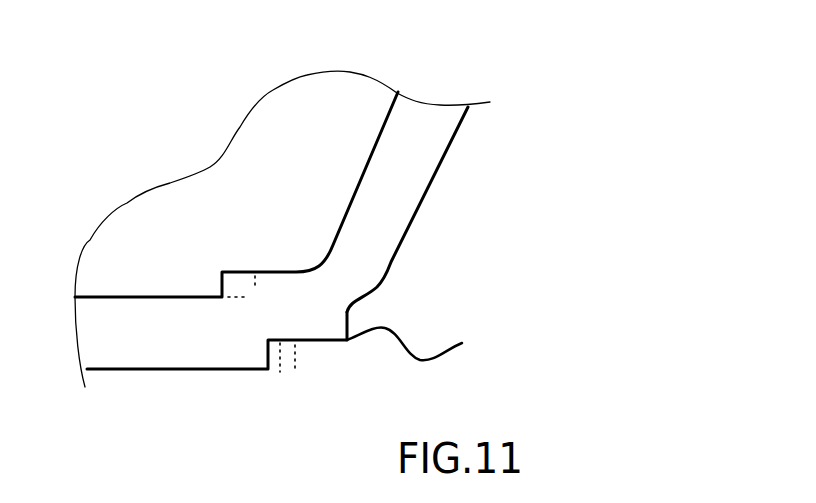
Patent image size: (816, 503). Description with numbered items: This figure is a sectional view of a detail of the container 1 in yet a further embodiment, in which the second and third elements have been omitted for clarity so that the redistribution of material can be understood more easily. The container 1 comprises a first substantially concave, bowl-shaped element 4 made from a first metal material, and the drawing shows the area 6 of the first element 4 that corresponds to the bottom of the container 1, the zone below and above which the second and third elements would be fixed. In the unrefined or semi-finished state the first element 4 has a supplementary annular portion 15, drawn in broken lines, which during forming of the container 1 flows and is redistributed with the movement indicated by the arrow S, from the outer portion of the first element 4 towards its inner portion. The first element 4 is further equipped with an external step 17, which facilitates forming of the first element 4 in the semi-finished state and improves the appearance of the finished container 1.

The container 1 is at (163, 78).
The first substantially concave element 4 is at (410, 182).
The area of the first element 6 is at (187, 313).
The supplementary annular portion 15 is at (283, 361).
The external step 17 is at (421, 347).
The arrow indicating movement S is at (255, 295).